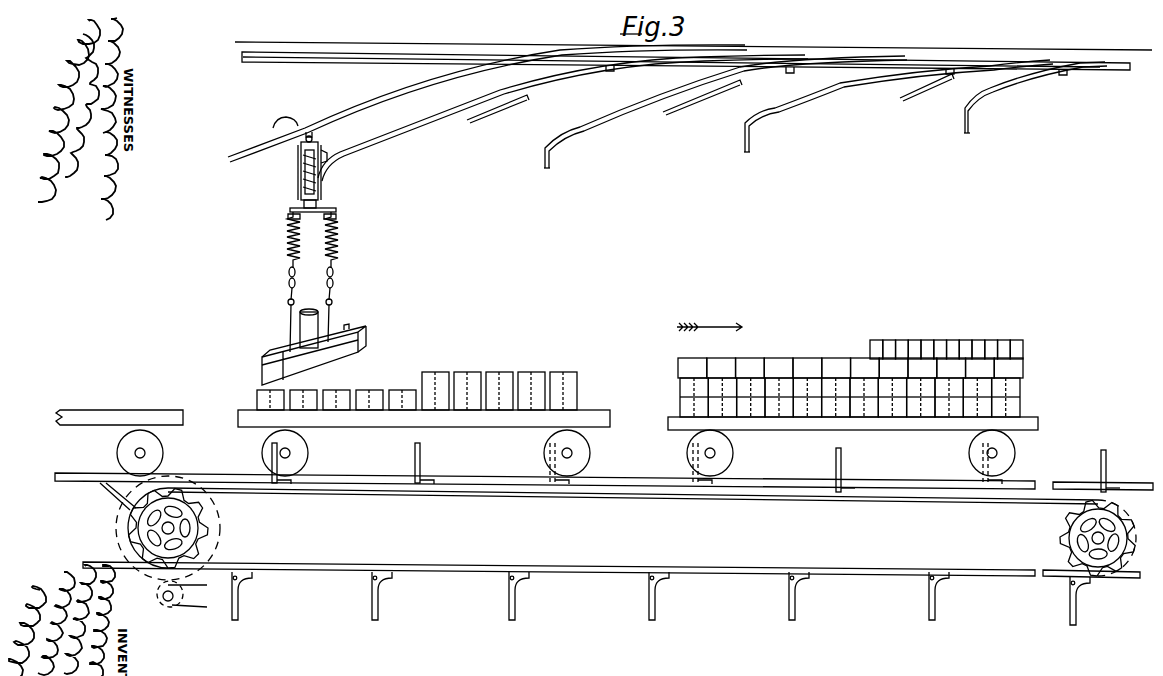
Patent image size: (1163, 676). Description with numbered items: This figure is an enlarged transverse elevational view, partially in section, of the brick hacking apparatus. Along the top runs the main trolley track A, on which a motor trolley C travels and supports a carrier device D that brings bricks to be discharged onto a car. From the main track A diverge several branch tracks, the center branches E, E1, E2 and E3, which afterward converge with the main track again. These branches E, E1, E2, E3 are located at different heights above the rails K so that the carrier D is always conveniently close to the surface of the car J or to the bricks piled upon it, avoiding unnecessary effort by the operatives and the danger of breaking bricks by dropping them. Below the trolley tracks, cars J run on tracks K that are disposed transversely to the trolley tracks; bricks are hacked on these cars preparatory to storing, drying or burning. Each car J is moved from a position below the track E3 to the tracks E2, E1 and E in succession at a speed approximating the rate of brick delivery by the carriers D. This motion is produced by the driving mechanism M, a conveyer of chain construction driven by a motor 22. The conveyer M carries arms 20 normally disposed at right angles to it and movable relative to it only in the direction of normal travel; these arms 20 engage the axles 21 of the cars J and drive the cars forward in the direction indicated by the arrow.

The trolley track A is at (1127, 70).
The motor trolley C is at (300, 192).
The carrier device D is at (360, 337).
The branch track E is at (985, 117).
The branch track E1 is at (765, 123).
The branch track E2 is at (571, 136).
The branch track E3 is at (372, 143).
The car J is at (662, 419).
The track K is at (1028, 483).
The driving mechanism M is at (750, 576).
The arm 20 is at (262, 451).
The axle 21 is at (291, 452).
The motor 22 is at (172, 604).